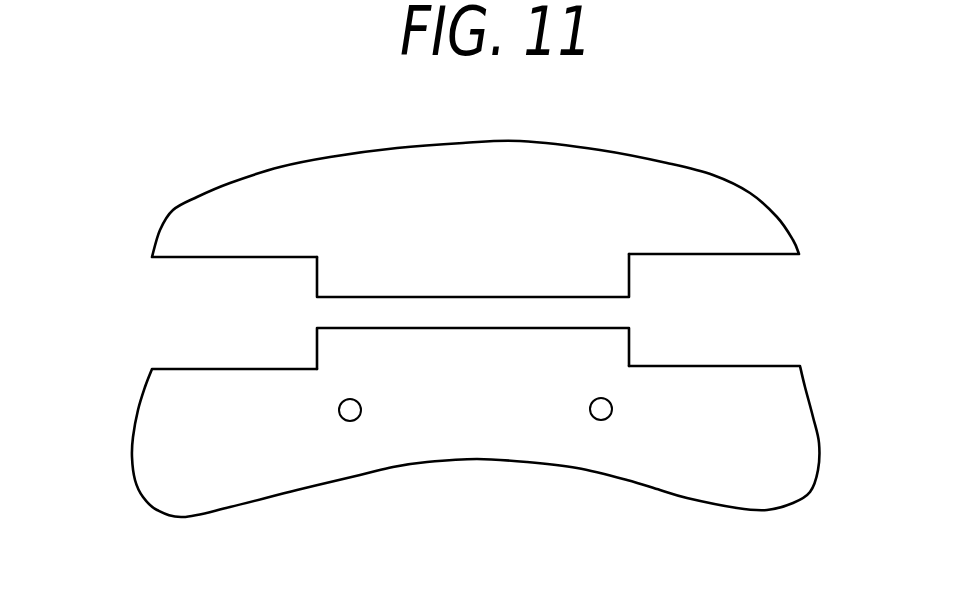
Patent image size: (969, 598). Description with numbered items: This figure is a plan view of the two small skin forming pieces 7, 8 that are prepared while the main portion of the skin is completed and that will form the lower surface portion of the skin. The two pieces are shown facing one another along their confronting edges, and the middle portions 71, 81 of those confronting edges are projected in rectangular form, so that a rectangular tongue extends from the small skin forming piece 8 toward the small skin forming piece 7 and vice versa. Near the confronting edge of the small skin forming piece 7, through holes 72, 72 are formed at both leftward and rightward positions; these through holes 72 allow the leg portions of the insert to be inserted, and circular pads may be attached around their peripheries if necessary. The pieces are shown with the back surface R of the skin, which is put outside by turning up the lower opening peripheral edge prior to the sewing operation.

The small skin forming piece 7 is at (807, 492).
The middle portion of the confronting edge 71 is at (600, 355).
The through holes 72 is at (350, 418).
The small skin forming piece 8 is at (713, 175).
The middle portion of the confronting edge 81 is at (342, 268).
The back surface of the skin R is at (283, 183).